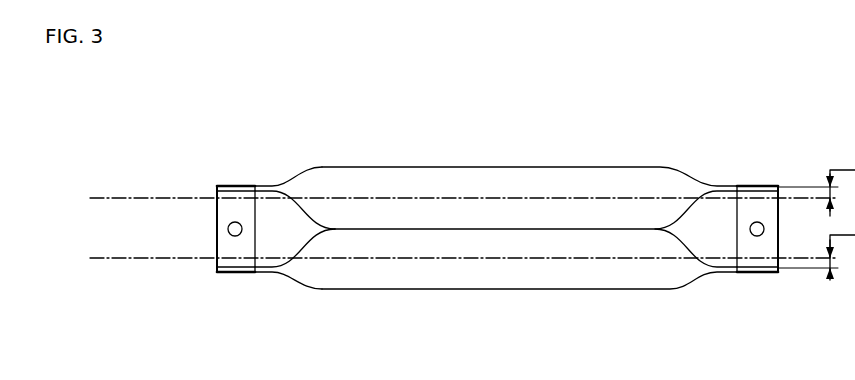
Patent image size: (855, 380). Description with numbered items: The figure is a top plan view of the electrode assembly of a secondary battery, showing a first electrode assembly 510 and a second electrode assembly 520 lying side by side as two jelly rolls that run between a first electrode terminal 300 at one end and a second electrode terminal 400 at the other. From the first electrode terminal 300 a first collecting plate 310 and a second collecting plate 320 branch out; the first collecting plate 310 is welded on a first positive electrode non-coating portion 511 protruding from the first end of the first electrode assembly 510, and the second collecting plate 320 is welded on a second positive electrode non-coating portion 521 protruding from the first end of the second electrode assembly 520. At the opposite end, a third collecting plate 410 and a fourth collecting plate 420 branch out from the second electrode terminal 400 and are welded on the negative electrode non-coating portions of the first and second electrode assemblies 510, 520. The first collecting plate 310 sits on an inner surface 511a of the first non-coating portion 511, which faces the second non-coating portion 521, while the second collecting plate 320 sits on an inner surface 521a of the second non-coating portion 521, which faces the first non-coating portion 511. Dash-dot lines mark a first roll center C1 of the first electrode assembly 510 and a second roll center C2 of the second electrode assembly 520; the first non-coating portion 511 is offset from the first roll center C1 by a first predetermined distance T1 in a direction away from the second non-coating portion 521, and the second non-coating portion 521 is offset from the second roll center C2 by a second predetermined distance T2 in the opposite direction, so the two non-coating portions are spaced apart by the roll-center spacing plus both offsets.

The first electrode terminal 300 is at (186, 222).
The second electrode terminal 400 is at (765, 226).
The first collecting plate 310 is at (258, 190).
The second collecting plate 320 is at (250, 265).
The third collecting plate 410 is at (745, 185).
The fourth collecting plate 420 is at (758, 265).
The first electrode assembly 510 is at (548, 164).
The second electrode assembly 520 is at (548, 292).
The first positive electrode non-coating portion 511 is at (237, 184).
The inner surface of the first non-coating portion 511a is at (215, 191).
The second positive electrode non-coating portion 521 is at (222, 274).
The inner surface of the second non-coating portion 521a is at (216, 266).
The first roll center C1 is at (96, 195).
The second roll center C2 is at (96, 261).
The first predetermined distance T1 is at (816, 184).
The second predetermined distance T2 is at (816, 248).